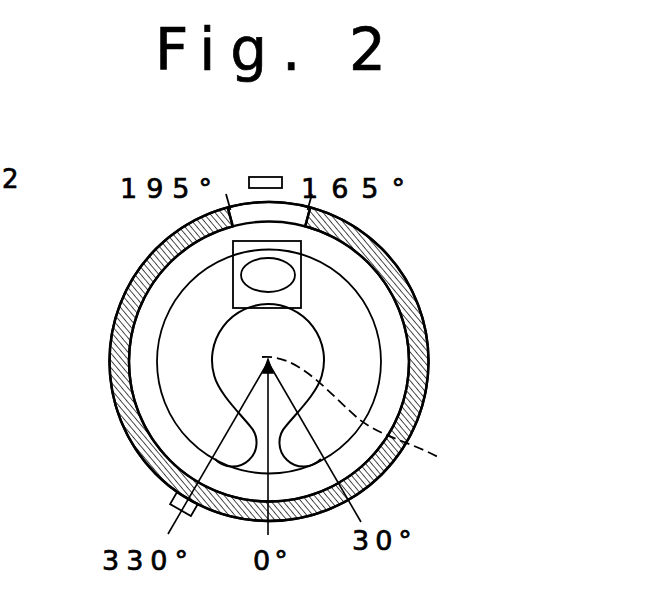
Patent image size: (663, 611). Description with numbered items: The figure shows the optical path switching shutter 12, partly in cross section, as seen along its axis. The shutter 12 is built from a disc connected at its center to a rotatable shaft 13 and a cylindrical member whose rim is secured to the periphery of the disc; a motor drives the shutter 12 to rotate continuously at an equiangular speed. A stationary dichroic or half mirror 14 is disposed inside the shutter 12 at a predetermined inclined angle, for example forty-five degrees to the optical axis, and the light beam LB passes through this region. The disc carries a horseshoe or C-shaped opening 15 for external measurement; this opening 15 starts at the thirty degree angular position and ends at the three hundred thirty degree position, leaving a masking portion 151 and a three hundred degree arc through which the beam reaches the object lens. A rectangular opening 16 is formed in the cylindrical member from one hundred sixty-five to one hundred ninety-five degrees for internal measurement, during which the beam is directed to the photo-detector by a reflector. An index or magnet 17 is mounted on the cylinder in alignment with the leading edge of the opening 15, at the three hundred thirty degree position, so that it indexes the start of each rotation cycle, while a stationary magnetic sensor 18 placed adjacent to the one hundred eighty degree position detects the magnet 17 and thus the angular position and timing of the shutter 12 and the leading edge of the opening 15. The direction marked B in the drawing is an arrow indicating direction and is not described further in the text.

The shutter 12 is at (110, 349).
The rotatable shaft 13 is at (375, 418).
The dichroic or half mirror 14 is at (302, 270).
The C-shaped opening 15 is at (377, 355).
The rectangular opening 16 is at (300, 205).
The index or magnet 17 is at (170, 500).
The magnetic sensor 18 is at (251, 177).
The masking portion 151 is at (276, 447).
The light beam LB is at (256, 276).
The direction B is at (267, 163).